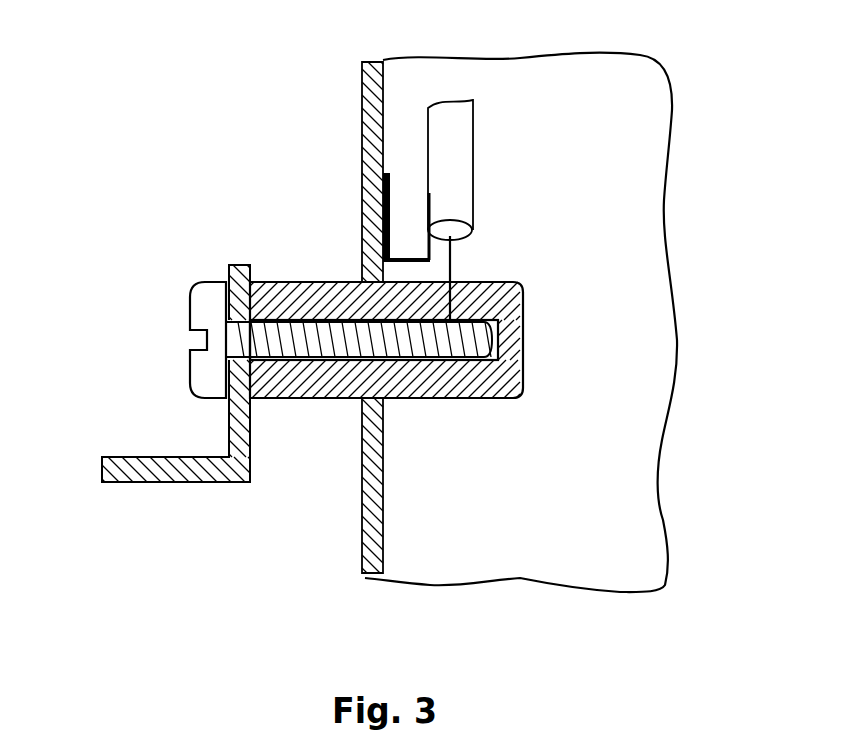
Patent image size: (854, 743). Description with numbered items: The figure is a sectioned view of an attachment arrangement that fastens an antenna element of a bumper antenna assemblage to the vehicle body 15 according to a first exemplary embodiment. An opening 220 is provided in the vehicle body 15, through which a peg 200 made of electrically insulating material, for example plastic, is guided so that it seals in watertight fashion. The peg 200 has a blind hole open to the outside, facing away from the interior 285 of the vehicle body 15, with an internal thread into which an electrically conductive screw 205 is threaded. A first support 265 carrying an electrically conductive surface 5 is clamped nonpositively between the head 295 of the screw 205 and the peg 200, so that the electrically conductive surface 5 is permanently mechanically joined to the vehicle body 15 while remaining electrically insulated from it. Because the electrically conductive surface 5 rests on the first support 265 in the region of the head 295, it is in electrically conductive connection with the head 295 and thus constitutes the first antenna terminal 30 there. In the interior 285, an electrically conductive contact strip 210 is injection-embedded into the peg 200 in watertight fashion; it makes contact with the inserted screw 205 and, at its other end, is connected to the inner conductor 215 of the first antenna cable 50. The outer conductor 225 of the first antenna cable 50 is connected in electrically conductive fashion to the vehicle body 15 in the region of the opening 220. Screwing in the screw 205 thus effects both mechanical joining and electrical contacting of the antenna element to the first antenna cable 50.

The electrically conductive surface 5 is at (159, 387).
The vehicle body 15 is at (378, 488).
The first antenna terminal 30 is at (228, 282).
The first antenna cable 50 is at (465, 152).
The peg 200 is at (297, 282).
The screw 205 is at (269, 309).
The electrically conductive contact strip 210 is at (527, 358).
The inner conductor 215 is at (453, 260).
The opening 220 is at (358, 398).
The outer conductor 225 is at (380, 227).
The first support 265 is at (173, 473).
The interior 285 is at (648, 257).
The head 295 is at (207, 373).